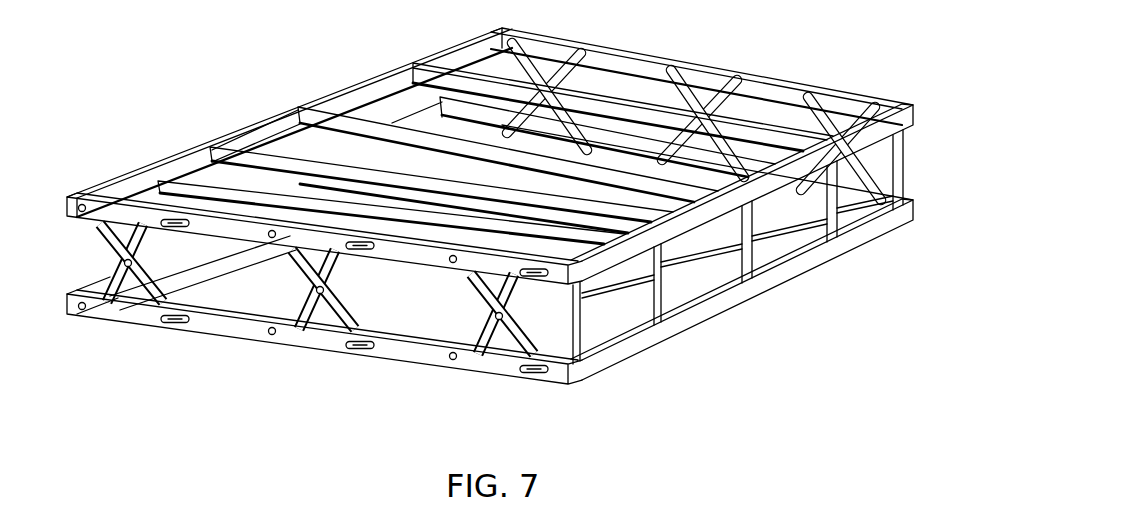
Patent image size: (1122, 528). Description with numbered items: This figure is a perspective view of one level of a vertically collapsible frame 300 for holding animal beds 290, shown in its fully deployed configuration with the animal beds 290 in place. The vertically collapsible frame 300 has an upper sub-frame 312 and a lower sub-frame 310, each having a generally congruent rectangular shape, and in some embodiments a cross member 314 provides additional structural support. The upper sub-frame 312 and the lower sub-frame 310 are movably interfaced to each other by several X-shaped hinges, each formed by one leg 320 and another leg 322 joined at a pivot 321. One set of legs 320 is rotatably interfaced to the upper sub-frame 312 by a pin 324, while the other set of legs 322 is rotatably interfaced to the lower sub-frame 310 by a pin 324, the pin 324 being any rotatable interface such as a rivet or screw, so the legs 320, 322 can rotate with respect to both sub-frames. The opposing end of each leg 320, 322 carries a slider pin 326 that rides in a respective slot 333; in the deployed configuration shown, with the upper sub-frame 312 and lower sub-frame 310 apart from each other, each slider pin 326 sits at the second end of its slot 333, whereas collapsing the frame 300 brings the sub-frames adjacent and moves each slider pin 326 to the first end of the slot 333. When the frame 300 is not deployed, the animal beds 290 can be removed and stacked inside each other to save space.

The vertically collapsible frame 300 is at (871, 44).
The lower sub-frame 310 is at (800, 260).
The upper sub-frame 312 is at (853, 208).
The cross member 314 is at (273, 150).
The leg 320 is at (320, 328).
The pivot 321 is at (121, 258).
The leg 322 is at (374, 344).
The pin 324 is at (454, 255).
The slider pin 326 is at (372, 243).
The slot 333 is at (518, 370).
The animal beds 290 is at (604, 322).